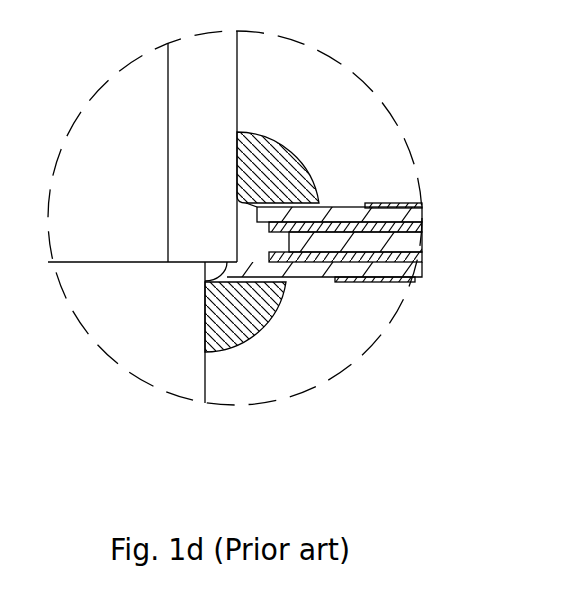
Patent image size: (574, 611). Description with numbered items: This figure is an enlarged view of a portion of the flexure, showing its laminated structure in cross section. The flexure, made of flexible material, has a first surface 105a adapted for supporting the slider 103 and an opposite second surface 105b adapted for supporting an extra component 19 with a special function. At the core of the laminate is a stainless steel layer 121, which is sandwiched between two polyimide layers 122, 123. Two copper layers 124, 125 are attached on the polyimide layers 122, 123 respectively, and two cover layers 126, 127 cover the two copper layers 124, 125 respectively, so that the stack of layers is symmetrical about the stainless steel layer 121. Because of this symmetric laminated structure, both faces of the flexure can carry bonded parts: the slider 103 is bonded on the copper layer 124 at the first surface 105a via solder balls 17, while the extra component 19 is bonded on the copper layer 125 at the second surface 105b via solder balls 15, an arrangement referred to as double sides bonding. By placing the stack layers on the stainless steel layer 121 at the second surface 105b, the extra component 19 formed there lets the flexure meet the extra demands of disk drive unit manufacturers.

The slider 103 is at (182, 355).
The extra component 19 is at (230, 82).
The solder ball 15 is at (268, 167).
The solder ball 17 is at (237, 327).
The first surface 105a is at (348, 325).
The second surface 105b is at (370, 168).
The stainless steel layer 121 is at (410, 258).
The polyimide layer 122 is at (414, 266).
The polyimide layer 123 is at (410, 242).
The copper layer 124 is at (400, 270).
The copper layer 125 is at (418, 228).
The cover layer 126 is at (386, 275).
The cover layer 127 is at (412, 217).